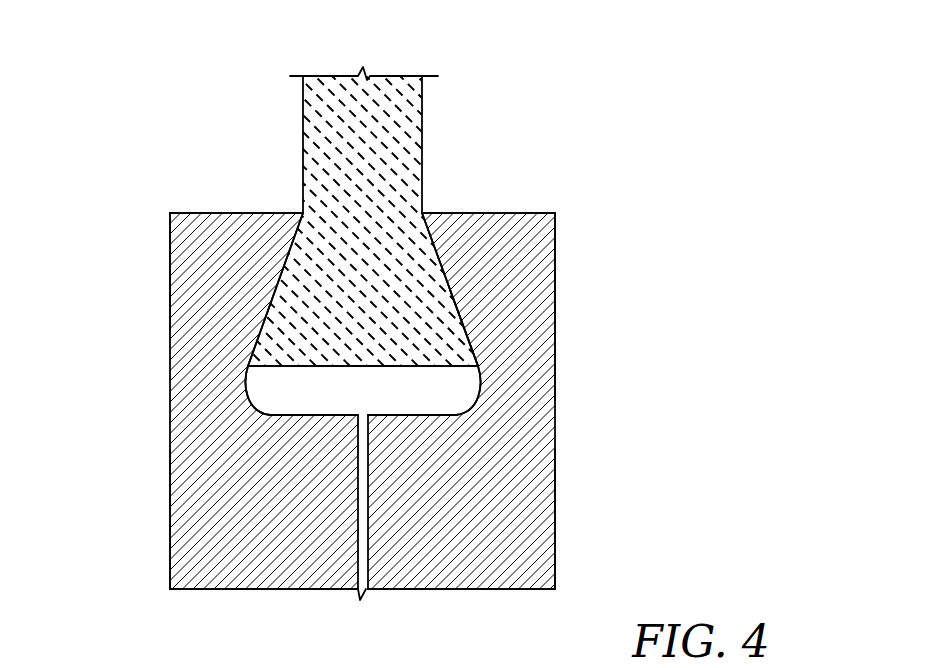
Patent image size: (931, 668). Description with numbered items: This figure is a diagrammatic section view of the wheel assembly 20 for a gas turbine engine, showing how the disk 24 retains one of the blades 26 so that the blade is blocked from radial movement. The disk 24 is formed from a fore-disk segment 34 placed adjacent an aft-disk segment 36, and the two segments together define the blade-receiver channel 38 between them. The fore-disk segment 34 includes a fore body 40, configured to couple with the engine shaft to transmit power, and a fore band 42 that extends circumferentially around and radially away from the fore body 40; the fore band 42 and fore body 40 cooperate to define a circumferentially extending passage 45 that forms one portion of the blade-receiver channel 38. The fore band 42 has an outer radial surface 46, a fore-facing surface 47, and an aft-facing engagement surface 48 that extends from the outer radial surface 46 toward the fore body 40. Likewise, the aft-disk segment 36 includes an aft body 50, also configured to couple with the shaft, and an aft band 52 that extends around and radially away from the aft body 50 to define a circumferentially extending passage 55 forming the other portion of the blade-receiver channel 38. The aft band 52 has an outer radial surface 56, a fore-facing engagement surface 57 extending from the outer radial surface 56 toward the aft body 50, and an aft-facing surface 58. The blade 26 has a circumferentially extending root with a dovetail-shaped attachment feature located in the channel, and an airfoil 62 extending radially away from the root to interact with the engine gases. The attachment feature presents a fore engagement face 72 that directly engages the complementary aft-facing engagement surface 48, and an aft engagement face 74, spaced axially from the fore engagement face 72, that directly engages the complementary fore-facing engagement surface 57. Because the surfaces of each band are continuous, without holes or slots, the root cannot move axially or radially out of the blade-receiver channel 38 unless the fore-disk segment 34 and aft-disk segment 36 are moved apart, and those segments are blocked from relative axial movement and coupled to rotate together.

The wheel assembly 20 is at (125, 77).
The disk 24 is at (170, 410).
The blade 26 is at (427, 93).
The fore-disk segment 34 is at (170, 540).
The aft-disk segment 36 is at (555, 553).
The blade-receiver channel 38 is at (402, 394).
The fore body 40 is at (263, 530).
The fore band 42 is at (170, 270).
The passage 45 is at (328, 402).
The outer radial surface 46 is at (193, 213).
The fore-facing surface 47 is at (170, 230).
The aft-facing engagement surface 48 is at (294, 248).
The aft body 50 is at (505, 548).
The aft band 52 is at (555, 262).
The passage 55 is at (437, 402).
The outer radial surface 56 is at (463, 213).
The fore-facing engagement surface 57 is at (445, 270).
The aft-facing surface 58 is at (555, 290).
The airfoil 62 is at (422, 128).
The fore engagement face 72 is at (262, 315).
The aft engagement face 74 is at (458, 310).